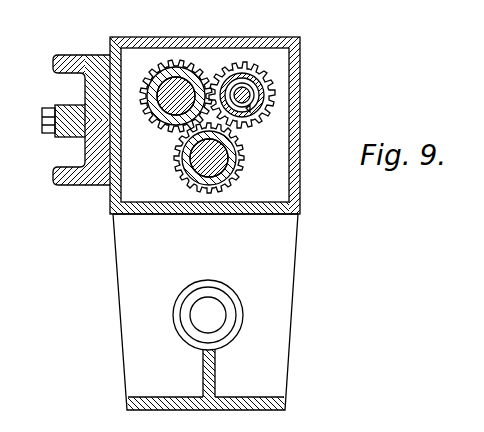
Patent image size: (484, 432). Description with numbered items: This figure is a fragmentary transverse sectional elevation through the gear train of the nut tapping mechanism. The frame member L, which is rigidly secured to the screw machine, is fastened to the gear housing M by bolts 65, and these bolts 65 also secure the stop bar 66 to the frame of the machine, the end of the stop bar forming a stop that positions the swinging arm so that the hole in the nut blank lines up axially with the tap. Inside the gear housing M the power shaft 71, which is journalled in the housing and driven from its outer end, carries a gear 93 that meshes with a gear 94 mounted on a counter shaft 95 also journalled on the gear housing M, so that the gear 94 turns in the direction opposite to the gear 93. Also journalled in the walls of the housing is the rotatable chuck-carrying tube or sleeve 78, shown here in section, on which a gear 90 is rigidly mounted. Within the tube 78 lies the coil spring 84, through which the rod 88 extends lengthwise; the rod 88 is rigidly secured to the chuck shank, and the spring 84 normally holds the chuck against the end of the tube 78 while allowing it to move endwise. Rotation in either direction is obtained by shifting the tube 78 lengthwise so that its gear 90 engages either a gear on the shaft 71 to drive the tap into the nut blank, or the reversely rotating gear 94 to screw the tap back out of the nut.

The gear housing M is at (297, 177).
The frame member L is at (83, 186).
The bolts 65 is at (42, 121).
The stop bar 66 is at (66, 136).
The gear 93 is at (158, 63).
The shaft 71 is at (178, 88).
The tube or sleeve 78 is at (270, 116).
The rod 88 is at (243, 92).
The spring 84 is at (237, 80).
The gear 90 is at (266, 100).
The gear 94 is at (244, 163).
The counter shaft 95 is at (200, 162).